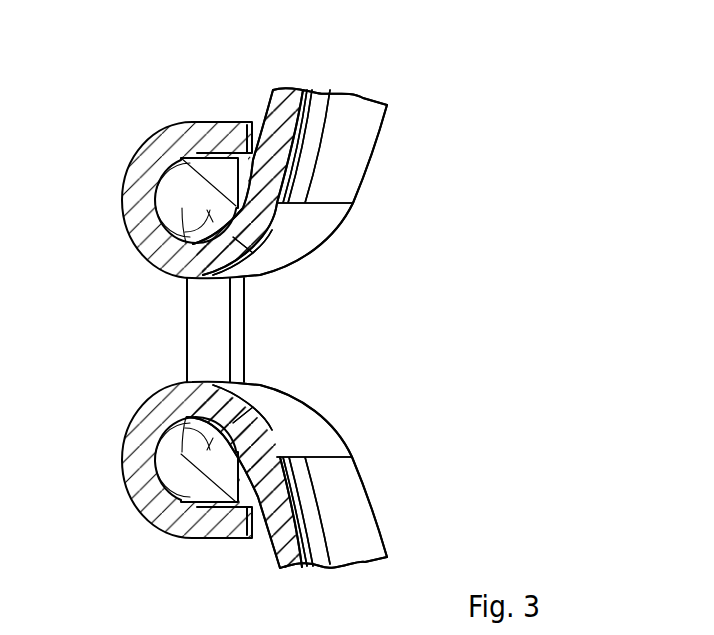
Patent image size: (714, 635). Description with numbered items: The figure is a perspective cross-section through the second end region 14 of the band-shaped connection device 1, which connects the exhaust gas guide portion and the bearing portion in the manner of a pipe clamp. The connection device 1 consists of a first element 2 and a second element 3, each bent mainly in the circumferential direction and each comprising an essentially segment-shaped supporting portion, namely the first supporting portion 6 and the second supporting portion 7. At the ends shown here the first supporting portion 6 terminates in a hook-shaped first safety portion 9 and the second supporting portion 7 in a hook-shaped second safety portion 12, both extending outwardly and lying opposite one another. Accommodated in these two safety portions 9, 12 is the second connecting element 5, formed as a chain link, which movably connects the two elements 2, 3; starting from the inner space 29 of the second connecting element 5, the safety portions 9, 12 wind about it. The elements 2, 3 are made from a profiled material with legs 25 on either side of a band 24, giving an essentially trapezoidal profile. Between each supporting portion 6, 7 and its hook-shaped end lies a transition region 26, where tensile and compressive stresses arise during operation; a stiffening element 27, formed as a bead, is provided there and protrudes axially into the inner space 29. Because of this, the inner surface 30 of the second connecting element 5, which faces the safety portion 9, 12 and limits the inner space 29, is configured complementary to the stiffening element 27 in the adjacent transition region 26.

The connection device 1 is at (297, 316).
The first element 2 is at (260, 165).
The first supporting portion 6 is at (260, 165).
The second element 3 is at (304, 483).
The second supporting portion 7 is at (304, 483).
The second connecting element 5 is at (196, 330).
The first safety portion 9 is at (162, 175).
The second safety portion 12 is at (170, 528).
The second end region 14 is at (148, 165).
The band 24 is at (275, 115).
The legs 25 is at (358, 133).
The transition region 26 is at (370, 245).
The stiffening element 27 is at (262, 262).
The inner space 29 is at (207, 323).
The inner surface 30 is at (188, 227).